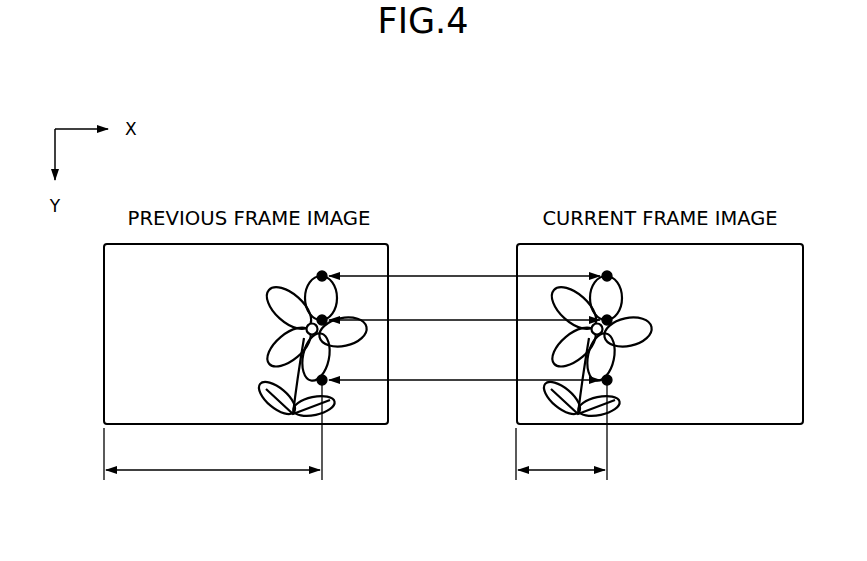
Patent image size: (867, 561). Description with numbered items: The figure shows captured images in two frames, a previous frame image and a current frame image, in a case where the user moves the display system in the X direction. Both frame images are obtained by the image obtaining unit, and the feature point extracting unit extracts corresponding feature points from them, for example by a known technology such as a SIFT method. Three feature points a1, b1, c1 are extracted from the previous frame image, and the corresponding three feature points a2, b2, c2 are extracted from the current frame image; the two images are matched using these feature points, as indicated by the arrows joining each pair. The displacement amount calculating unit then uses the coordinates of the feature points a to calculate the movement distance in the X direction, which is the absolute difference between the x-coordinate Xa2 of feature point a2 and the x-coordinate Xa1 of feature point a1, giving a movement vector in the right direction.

The feature point a1 is at (326, 384).
The feature point b1 is at (325, 316).
The feature point c1 is at (326, 272).
The feature point a2 is at (611, 384).
The feature point b2 is at (610, 316).
The feature point c2 is at (611, 272).
The x-coordinate of feature point a1 Xa1 is at (213, 432).
The x-coordinate of feature point a2 Xa2 is at (561, 432).